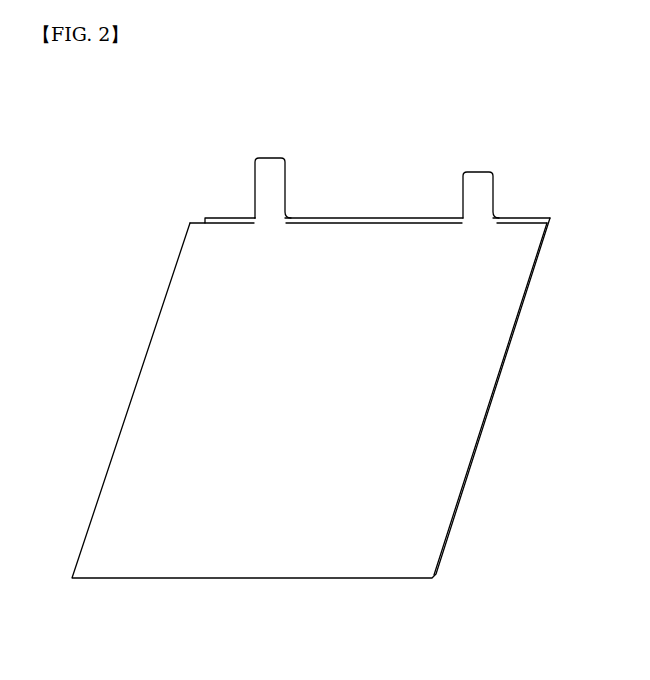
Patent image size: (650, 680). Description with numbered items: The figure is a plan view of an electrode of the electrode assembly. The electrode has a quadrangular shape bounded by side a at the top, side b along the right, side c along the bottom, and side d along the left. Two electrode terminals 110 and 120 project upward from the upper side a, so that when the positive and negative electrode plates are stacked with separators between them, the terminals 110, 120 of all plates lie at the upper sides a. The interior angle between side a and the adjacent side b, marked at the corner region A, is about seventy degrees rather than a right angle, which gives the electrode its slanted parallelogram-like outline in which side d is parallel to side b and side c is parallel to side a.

The electrode terminal 110 is at (275, 177).
The electrode terminal 120 is at (478, 184).
The corner region of pouch A is at (508, 224).
The side a is at (340, 218).
The side b is at (500, 367).
The side c is at (265, 578).
The side d is at (142, 367).